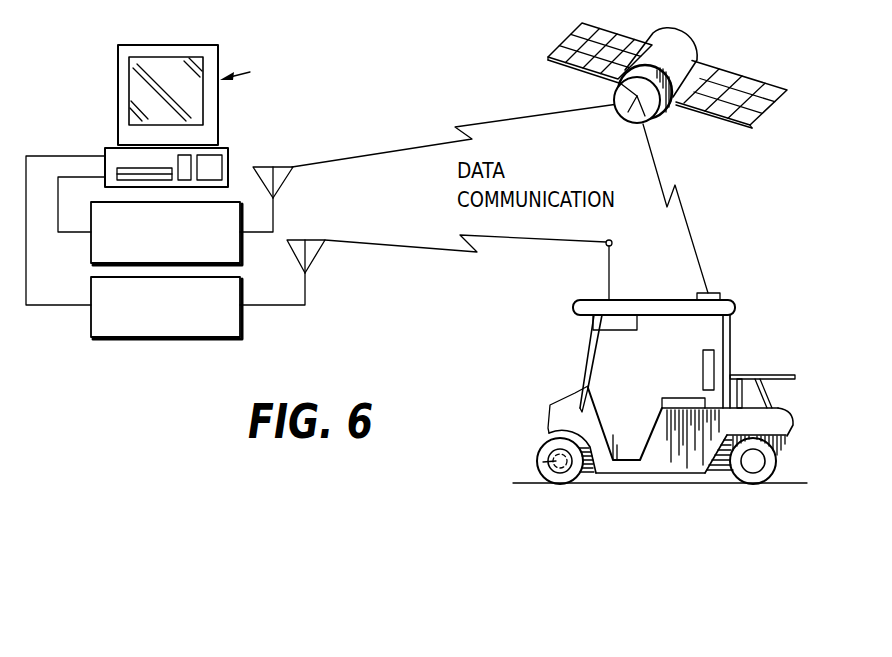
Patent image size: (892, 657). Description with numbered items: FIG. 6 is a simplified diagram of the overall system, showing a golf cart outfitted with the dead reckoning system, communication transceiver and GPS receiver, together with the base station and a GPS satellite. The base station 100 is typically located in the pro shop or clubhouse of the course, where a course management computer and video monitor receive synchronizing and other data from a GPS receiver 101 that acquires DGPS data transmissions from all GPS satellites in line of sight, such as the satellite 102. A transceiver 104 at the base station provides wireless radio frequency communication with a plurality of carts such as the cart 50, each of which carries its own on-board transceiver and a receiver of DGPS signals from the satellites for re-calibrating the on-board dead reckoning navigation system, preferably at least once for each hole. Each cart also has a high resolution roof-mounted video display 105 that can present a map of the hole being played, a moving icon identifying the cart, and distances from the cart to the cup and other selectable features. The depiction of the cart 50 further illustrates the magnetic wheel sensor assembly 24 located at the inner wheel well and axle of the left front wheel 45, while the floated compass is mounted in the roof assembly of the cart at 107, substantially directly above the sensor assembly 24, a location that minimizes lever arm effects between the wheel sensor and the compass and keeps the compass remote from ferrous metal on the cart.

The base station 100 is at (80, 75).
The GPS receiver 101 is at (92, 245).
The GPS satellite 102 is at (698, 62).
The transceiver 104 is at (242, 323).
The roof-mounted video display 105 is at (618, 331).
The roof assembly 107 is at (575, 313).
The cart 50 is at (646, 362).
The left front wheel 45 is at (543, 440).
The magnetic wheel sensor assembly 24 is at (530, 468).